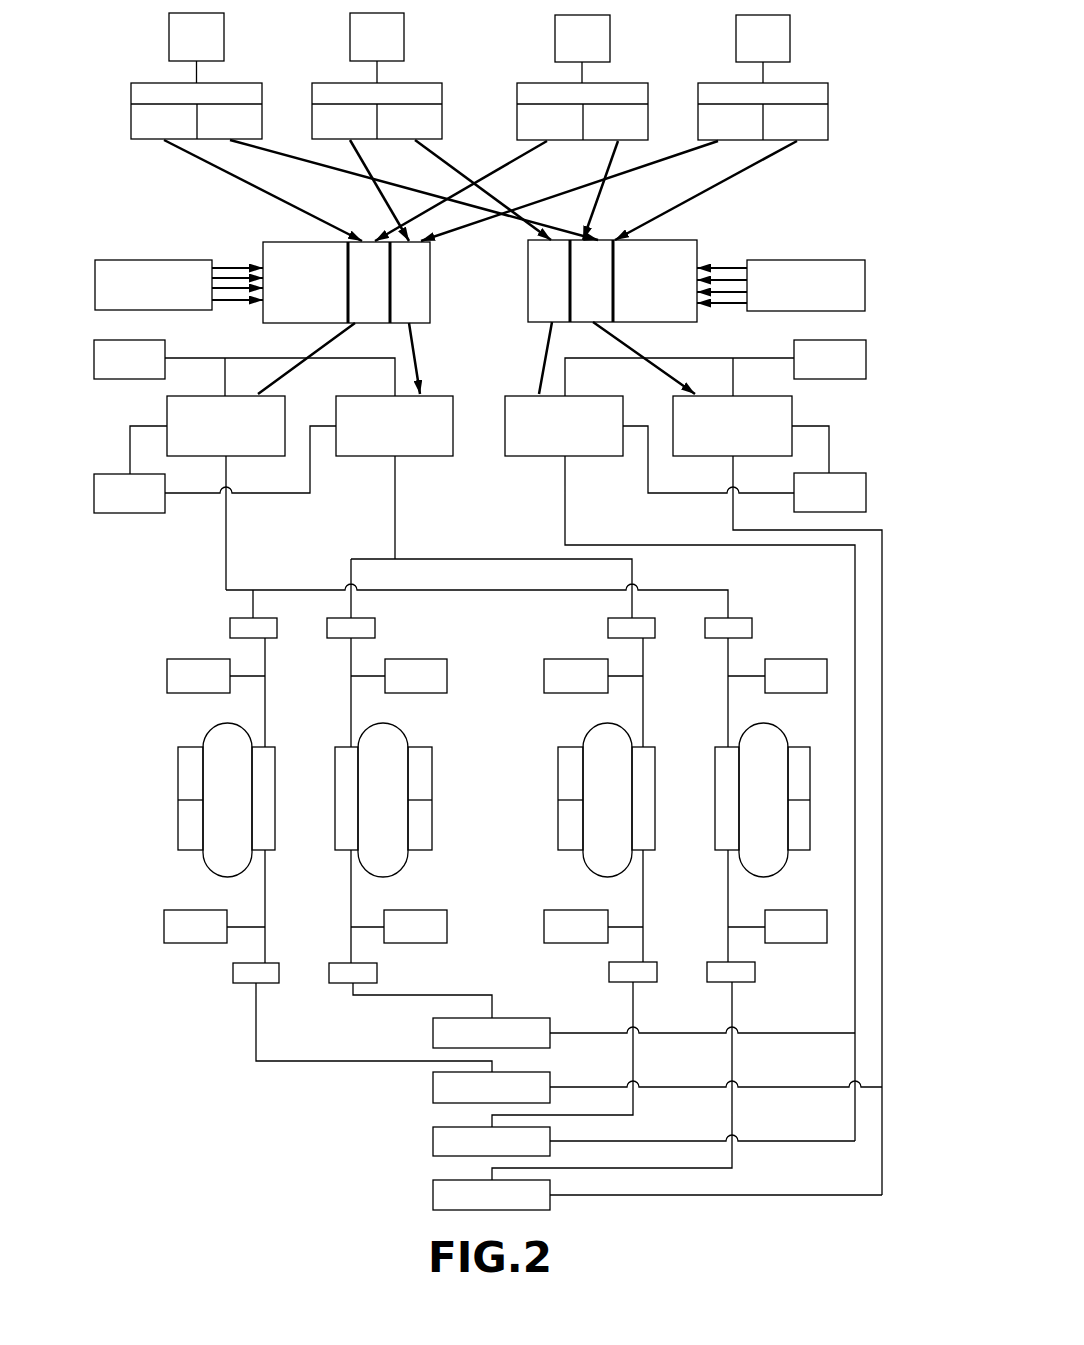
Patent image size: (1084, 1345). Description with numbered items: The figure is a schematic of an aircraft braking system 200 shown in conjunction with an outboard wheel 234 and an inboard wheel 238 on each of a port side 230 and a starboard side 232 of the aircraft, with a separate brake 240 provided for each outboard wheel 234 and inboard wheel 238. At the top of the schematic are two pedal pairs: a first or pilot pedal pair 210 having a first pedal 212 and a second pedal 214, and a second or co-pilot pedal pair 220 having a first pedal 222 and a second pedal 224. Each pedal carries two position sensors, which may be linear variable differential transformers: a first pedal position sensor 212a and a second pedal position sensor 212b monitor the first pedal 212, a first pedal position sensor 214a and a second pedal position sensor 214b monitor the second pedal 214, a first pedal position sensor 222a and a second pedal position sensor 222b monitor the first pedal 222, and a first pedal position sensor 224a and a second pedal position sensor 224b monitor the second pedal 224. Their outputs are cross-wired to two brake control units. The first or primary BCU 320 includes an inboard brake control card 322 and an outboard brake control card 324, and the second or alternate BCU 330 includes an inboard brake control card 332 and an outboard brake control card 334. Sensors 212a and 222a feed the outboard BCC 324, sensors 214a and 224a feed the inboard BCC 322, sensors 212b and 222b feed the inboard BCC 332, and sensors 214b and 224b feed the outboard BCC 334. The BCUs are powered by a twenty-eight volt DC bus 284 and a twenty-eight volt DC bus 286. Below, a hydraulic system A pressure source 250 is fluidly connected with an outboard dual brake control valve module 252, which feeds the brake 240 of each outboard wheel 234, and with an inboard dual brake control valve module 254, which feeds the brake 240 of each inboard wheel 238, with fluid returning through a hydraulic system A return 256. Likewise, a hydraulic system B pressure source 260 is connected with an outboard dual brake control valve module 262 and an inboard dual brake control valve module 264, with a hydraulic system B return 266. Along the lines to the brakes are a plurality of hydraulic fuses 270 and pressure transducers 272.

The aircraft braking system 200 is at (210, 1112).
The first pedal pair 210 is at (152, 58).
The first pedal 212 is at (180, 48).
The first pedal position sensor 212a is at (141, 135).
The second pedal position sensor 212b is at (206, 135).
The second pedal 214 is at (360, 48).
The first pedal position sensor 214a is at (321, 135).
The second pedal position sensor 214b is at (386, 135).
The second pedal pair 220 is at (810, 32).
The first pedal 222 is at (566, 49).
The first pedal position sensor 222a is at (527, 135).
The second pedal position sensor 222b is at (592, 135).
The second pedal 224 is at (746, 49).
The first pedal position sensor 224a is at (707, 135).
The second pedal position sensor 224b is at (772, 135).
The port side 230 is at (118, 755).
The starboard side 232 is at (890, 812).
The outboard wheel 234 is at (211, 798).
The inboard wheel 238 is at (366, 798).
The brake 240 is at (167, 799).
The hydraulic system A pressure source 250 is at (112, 370).
The outboard dual brake control valve module 252 is at (209, 437).
The inboard dual brake control valve module 254 is at (377, 437).
The hydraulic system A return 256 is at (112, 504).
The hydraulic system B pressure source 260 is at (813, 370).
The outboard dual brake control valve module 262 is at (715, 437).
The inboard dual brake control valve module 264 is at (547, 437).
The hydraulic system B return 266 is at (813, 503).
The hydraulic fuse 270 is at (327, 628).
The pressure transducer 272 is at (182, 687).
The 28 VDC bus 284 is at (136, 296).
The 28 VDC bus 286 is at (789, 296).
The first brake control unit 320 is at (288, 294).
The inboard brake control card 322 is at (420, 298).
The outboard brake control card 324 is at (356, 253).
The second brake control unit 330 is at (638, 292).
The inboard brake control card 332 is at (540, 283).
The outboard brake control card 334 is at (602, 253).